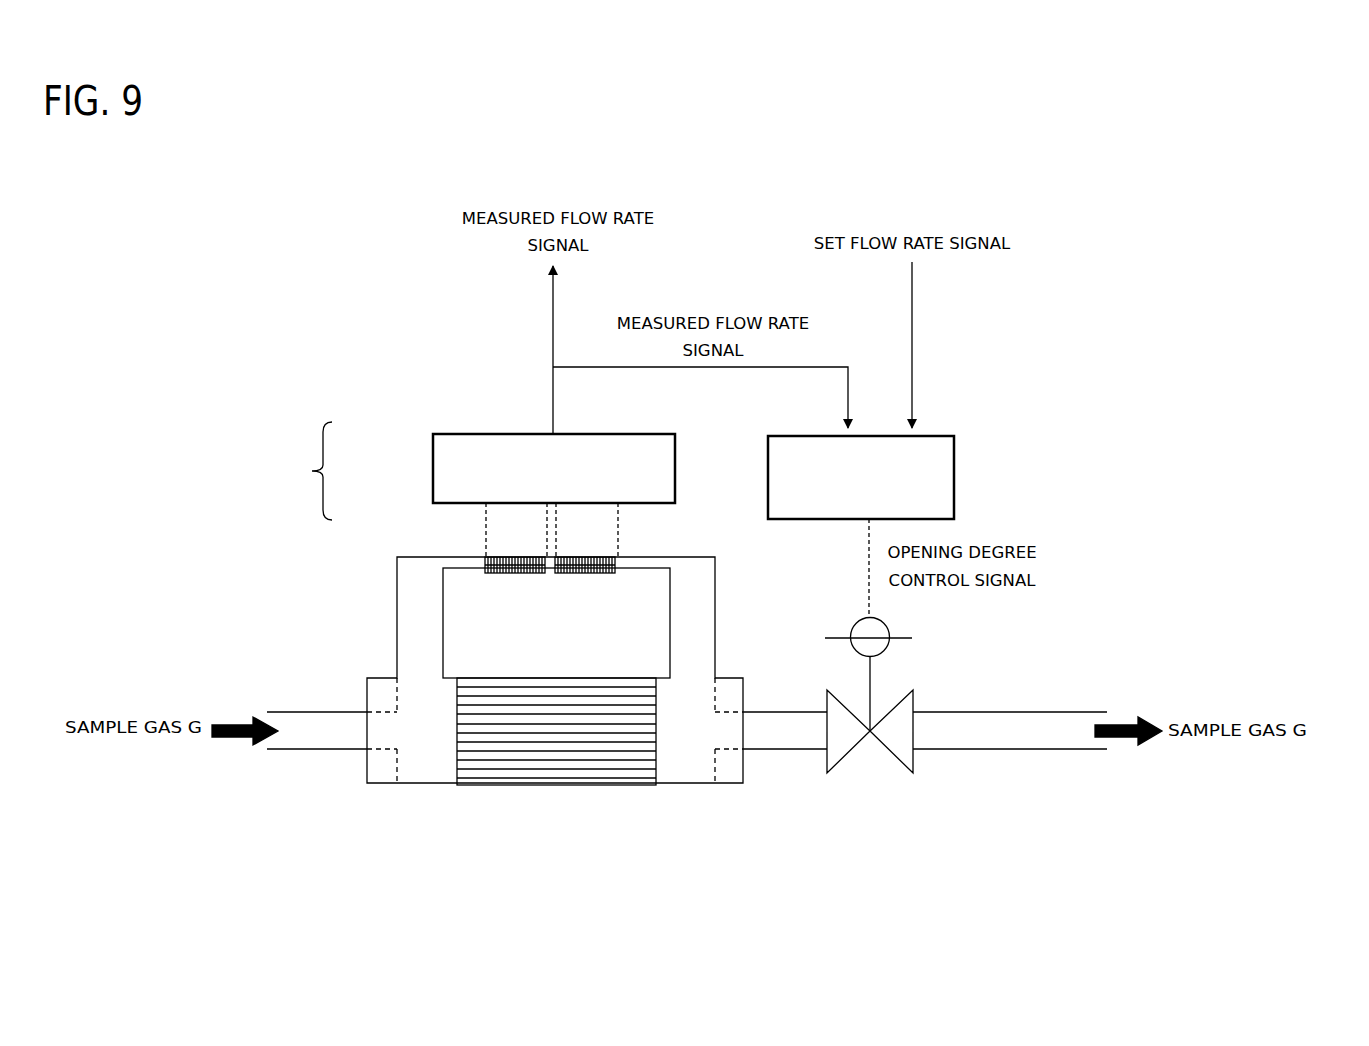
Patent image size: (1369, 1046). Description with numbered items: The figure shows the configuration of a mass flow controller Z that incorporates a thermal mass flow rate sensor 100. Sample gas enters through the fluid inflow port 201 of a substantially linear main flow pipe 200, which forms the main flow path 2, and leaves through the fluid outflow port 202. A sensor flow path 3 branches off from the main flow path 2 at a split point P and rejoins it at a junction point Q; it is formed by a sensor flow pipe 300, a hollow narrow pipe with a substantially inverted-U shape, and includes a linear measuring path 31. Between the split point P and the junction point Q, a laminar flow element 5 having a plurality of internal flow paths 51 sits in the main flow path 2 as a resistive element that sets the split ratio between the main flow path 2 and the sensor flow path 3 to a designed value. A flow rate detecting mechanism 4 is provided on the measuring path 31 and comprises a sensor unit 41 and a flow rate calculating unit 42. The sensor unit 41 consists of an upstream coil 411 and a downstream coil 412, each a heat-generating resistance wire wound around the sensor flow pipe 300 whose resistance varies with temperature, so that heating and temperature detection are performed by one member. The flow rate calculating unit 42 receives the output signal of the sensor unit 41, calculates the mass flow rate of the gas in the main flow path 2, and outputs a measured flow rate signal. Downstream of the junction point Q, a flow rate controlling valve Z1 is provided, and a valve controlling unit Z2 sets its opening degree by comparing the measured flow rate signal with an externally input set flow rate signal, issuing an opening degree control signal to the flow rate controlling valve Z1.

The mass flow controller Z is at (366, 247).
The thermal flow rate sensor 100 is at (429, 377).
The main flow path 2 is at (423, 743).
The main flow pipe 200 is at (366, 786).
The fluid inflow port 201 is at (290, 710).
The fluid outflow port 202 is at (785, 712).
The sensor flow path 3 is at (420, 608).
The sensor flow pipe 300 is at (722, 582).
The measuring path 31 is at (633, 560).
The flow rate detecting mechanism 4 is at (306, 471).
The sensor unit 41 is at (475, 562).
The upstream coil 411 is at (508, 577).
The downstream coil 412 is at (590, 577).
The flow rate calculating unit 42 is at (433, 462).
The laminar flow element 5 is at (556, 764).
The internal flow paths 51 is at (566, 749).
The split point P is at (418, 674).
The junction point Q is at (694, 671).
The flow rate controlling valve Z1 is at (892, 679).
The valve controlling unit Z2 is at (954, 475).